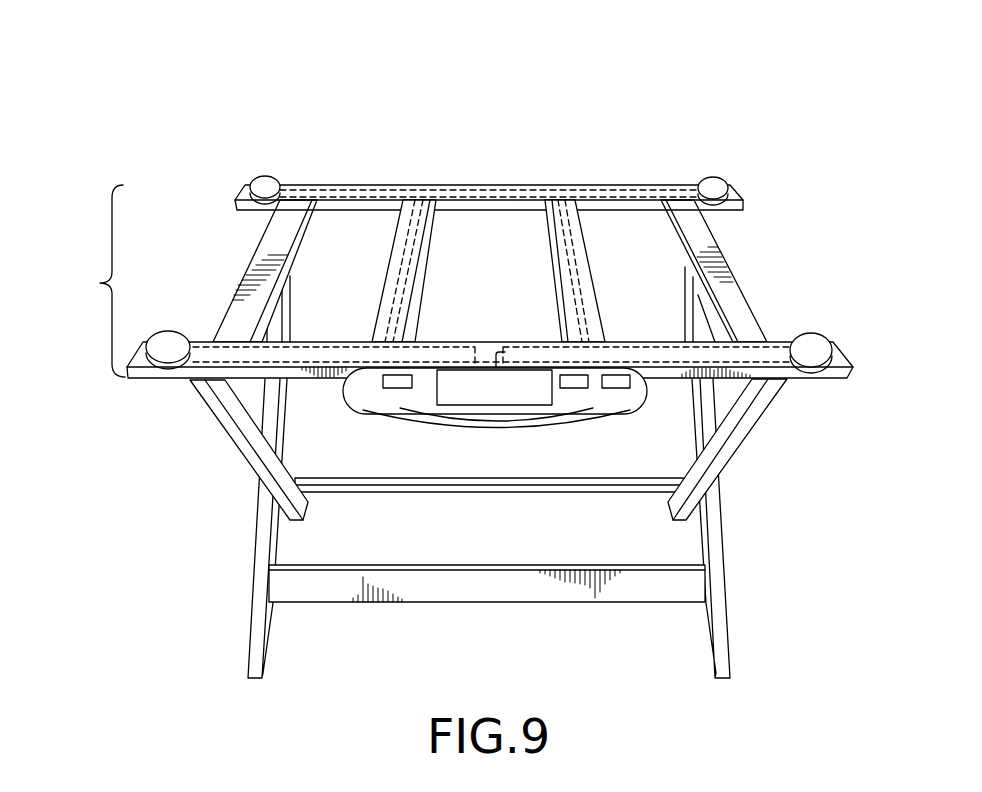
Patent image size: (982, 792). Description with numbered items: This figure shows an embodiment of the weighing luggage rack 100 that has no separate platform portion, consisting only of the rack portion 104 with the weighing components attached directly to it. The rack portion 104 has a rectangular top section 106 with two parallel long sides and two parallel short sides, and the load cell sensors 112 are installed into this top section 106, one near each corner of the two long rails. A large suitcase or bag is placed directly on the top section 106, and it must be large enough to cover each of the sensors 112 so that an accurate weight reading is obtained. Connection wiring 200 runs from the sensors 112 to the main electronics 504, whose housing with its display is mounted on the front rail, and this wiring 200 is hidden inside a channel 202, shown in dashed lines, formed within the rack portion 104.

The weighing luggage rack 100 is at (181, 141).
The rack portion 104 is at (343, 194).
The top section 106 is at (86, 281).
The load cell sensors 112 is at (265, 183).
The connection wiring 200 is at (738, 355).
The channel 202 is at (508, 197).
The main electronics 504 is at (568, 396).